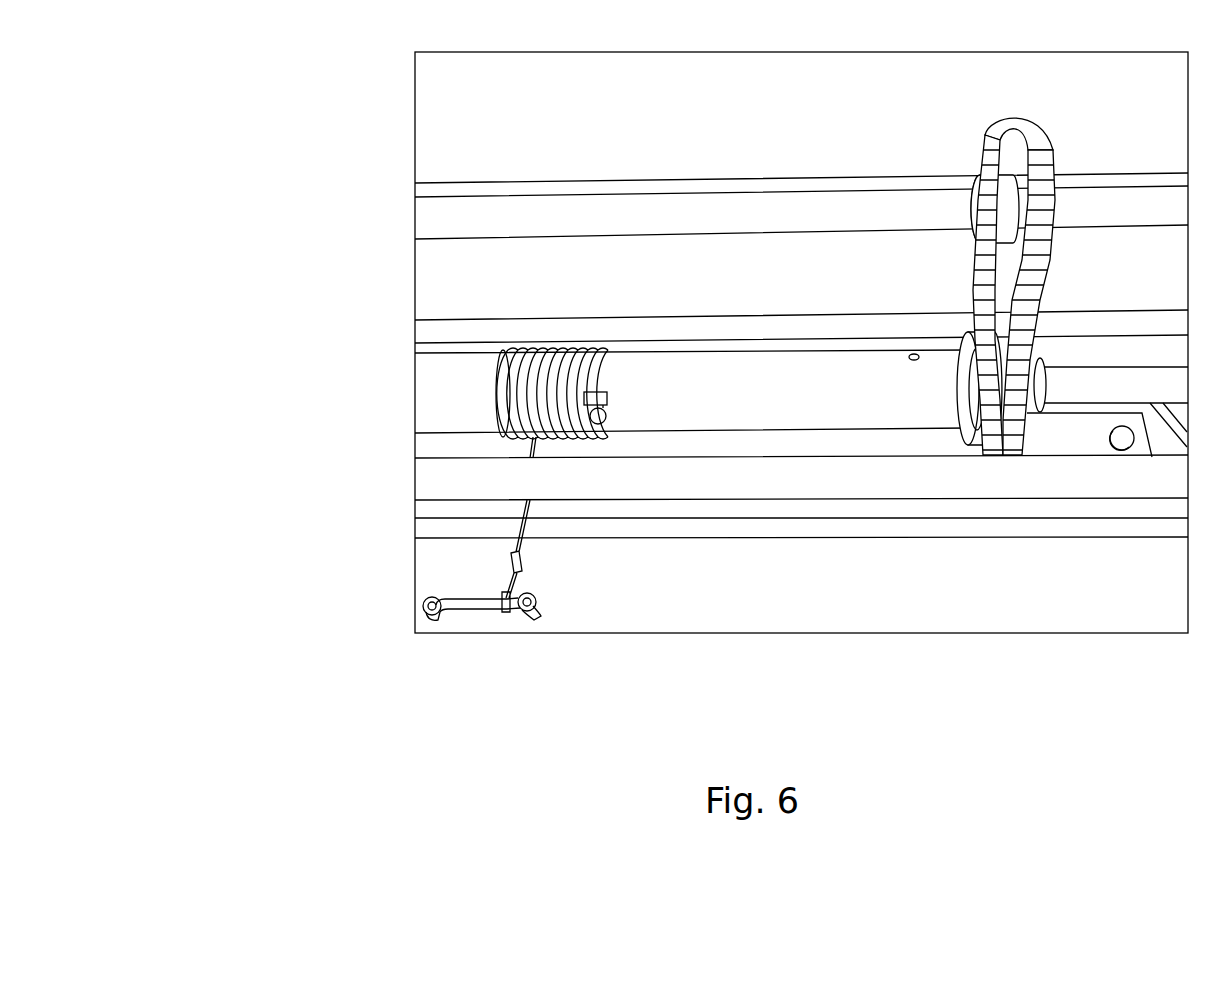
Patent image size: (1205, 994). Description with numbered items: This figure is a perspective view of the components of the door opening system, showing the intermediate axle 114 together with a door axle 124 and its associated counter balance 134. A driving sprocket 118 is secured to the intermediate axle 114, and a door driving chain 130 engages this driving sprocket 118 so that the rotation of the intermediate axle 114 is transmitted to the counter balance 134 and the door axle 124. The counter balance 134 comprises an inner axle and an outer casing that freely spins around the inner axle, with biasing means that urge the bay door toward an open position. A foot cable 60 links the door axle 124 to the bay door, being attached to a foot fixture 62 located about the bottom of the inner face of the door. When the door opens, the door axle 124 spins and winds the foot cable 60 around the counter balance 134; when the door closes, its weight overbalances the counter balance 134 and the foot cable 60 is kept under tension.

The foot cable 60 is at (525, 542).
The foot fixture 62 is at (472, 604).
The intermediate axle 114 is at (1102, 211).
The driving sprocket 118 is at (1007, 157).
The door axle 124 is at (608, 393).
The counter balance 134 is at (449, 392).
The door driving chain 130 is at (1024, 299).